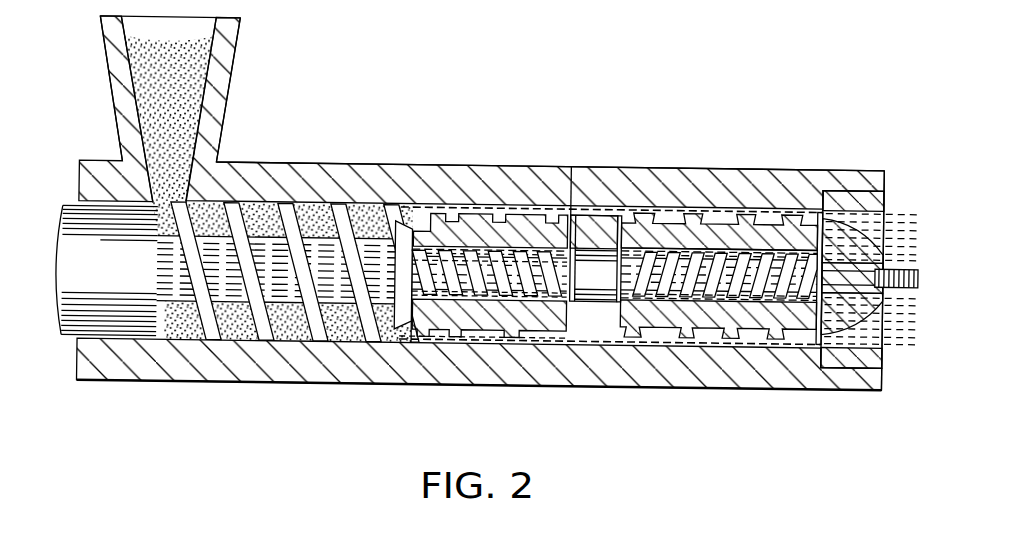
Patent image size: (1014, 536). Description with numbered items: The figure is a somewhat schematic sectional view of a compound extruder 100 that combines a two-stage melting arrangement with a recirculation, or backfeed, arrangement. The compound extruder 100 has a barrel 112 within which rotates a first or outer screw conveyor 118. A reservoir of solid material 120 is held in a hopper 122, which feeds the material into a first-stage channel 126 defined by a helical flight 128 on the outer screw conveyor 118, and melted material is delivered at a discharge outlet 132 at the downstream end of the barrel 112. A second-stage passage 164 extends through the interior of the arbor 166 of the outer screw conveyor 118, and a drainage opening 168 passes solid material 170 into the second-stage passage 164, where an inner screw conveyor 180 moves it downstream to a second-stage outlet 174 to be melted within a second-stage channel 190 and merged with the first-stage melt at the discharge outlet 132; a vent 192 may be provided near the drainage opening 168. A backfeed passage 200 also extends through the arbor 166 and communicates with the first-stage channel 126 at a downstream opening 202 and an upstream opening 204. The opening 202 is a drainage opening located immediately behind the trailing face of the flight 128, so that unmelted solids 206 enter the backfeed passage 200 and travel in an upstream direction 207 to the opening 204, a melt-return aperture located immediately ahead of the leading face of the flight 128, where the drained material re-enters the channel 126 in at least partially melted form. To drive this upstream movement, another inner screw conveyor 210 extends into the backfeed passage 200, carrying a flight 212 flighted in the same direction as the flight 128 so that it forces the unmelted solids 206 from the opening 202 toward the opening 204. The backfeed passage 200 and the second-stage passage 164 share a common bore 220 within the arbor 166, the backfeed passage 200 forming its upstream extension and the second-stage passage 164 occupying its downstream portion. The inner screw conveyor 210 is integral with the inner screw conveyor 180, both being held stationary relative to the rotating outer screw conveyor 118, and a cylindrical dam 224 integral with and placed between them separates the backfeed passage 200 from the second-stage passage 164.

The compound extruder 100 is at (497, 140).
The barrel 112 is at (550, 168).
The outer screw conveyor 118 is at (822, 196).
The solid material 120 is at (188, 77).
The hopper 122 is at (214, 111).
The first-stage channel 126 is at (208, 225).
The helical flight 128 is at (238, 226).
The discharge outlet 132 is at (892, 208).
The second-stage passage 164 is at (803, 240).
The arbor 166 is at (752, 255).
The drainage opening 168 is at (660, 222).
The solid material 170 is at (696, 211).
The second-stage outlet 174 is at (858, 258).
The inner screw conveyor 180 is at (748, 306).
The second-stage channel 190 is at (688, 238).
The vent 192 is at (618, 232).
The backfeed passage 200 is at (414, 214).
The opening 202 is at (568, 166).
The opening 204 is at (412, 248).
The unmelted solids 206 is at (553, 276).
The upstream direction 207 is at (520, 270).
The inner screw conveyor 210 is at (497, 299).
The flight 212 is at (472, 303).
The bore 220 is at (608, 255).
The cylindrical dam 224 is at (590, 300).